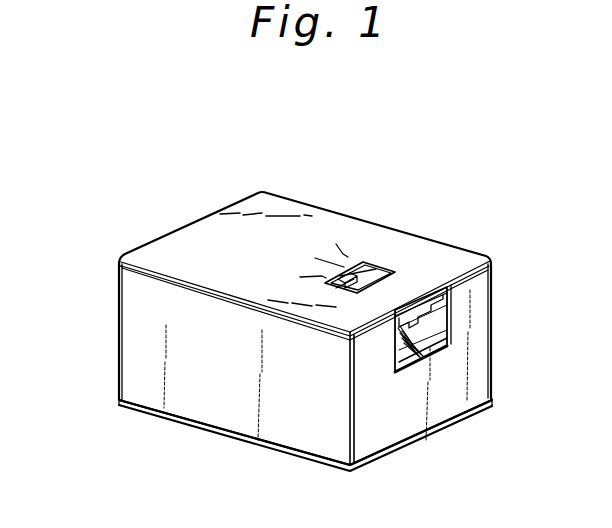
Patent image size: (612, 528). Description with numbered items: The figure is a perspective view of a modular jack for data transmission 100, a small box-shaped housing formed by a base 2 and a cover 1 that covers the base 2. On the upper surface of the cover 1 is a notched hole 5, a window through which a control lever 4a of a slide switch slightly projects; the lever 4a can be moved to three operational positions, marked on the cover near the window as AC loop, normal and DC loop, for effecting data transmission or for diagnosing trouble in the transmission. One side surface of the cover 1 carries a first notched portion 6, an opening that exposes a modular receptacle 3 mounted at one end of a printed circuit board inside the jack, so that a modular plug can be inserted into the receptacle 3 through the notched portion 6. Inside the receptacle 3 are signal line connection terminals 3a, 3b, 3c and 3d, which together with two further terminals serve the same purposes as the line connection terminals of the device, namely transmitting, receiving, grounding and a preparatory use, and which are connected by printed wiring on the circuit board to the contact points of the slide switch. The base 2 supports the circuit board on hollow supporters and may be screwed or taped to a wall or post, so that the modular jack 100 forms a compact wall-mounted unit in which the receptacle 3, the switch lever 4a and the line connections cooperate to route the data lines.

The modular jack for data transmission 100 is at (113, 251).
The cover 1 is at (430, 250).
The base 2 is at (457, 425).
The modular receptacle 3 is at (443, 301).
The signal line connection terminal 3a is at (415, 350).
The signal line connection terminal 3b is at (418, 354).
The signal line connection terminal 3c is at (421, 357).
The signal line connection terminal 3d is at (424, 360).
The control lever 4a is at (355, 272).
The notched hole 5 is at (375, 271).
The first notched portion 6 is at (438, 323).